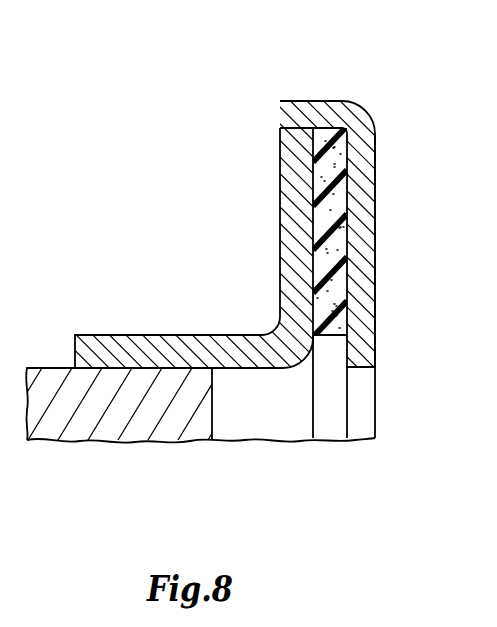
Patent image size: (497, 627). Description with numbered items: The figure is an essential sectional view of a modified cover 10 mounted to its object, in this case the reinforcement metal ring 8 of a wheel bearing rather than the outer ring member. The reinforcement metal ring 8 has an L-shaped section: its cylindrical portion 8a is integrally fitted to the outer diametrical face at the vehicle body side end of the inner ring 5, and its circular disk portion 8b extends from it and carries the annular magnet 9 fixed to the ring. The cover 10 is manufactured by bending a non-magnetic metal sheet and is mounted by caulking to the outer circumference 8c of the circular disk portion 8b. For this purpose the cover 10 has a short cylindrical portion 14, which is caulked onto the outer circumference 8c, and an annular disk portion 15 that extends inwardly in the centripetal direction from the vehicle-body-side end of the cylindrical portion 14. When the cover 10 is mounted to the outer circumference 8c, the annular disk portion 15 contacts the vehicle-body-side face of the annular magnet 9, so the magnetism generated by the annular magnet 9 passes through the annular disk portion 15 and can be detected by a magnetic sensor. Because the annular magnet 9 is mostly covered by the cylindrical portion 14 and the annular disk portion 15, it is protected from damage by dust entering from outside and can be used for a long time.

The inner ring 5 is at (143, 428).
The reinforcement metal ring 8 is at (225, 313).
The cylindrical portion 8a is at (113, 345).
The circular disk portion 8b is at (292, 245).
The outer circumference 8c is at (283, 127).
The annular magnet 9 is at (338, 202).
The cover 10 is at (275, 313).
The short cylindrical portion 14 is at (308, 110).
The annular disk portion 15 is at (363, 263).